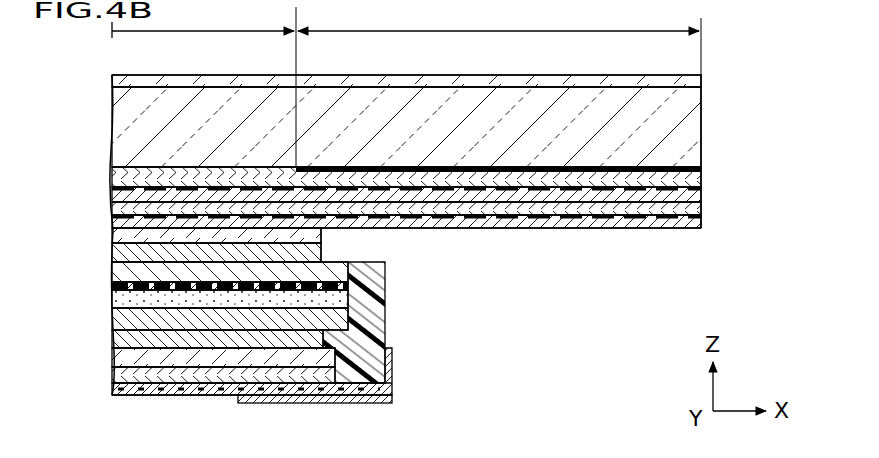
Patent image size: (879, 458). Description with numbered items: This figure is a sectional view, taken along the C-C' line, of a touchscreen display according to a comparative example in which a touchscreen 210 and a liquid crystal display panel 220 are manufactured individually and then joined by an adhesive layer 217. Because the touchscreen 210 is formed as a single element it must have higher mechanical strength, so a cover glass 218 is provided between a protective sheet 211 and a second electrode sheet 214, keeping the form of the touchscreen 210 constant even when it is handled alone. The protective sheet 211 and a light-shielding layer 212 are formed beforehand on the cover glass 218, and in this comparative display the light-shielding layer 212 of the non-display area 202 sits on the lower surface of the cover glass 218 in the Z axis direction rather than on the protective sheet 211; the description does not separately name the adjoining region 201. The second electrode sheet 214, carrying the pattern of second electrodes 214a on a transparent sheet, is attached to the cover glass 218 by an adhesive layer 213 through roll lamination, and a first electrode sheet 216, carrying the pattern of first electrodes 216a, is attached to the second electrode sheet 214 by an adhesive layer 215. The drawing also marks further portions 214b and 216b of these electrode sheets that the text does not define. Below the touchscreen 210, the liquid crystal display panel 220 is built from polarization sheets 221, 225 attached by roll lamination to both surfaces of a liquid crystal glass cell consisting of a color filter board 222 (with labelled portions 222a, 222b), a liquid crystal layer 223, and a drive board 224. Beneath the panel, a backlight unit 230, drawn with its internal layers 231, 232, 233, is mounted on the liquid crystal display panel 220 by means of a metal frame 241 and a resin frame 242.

The first region 201 is at (204, 86).
The non-display area 202 is at (499, 40).
The touchscreen 210 is at (105, 75).
The protective sheet 211 is at (701, 79).
The light-shielding layer 212 is at (701, 169).
The adhesive layer 213 is at (701, 180).
The second electrode sheet 214 is at (701, 195).
The second electrodes 214a is at (165, 195).
The second polarizer portion 214b is at (338, 195).
The adhesive layer 215 is at (701, 209).
The first electrode sheet 216 is at (701, 223).
The first electrodes 216a is at (236, 221).
The second substrate portion 216b is at (421, 221).
The adhesive layer 217 is at (322, 236).
The cover glass 218 is at (701, 120).
The liquid crystal display panel 220 is at (105, 243).
The polarization sheet 221 is at (308, 258).
The color filter board 222 is at (387, 278).
The first support portion 222a is at (126, 290).
The second support portion 222b is at (336, 290).
The liquid crystal layer 223 is at (378, 308).
The drive board 224 is at (387, 326).
The polarization sheet 225 is at (393, 348).
The backlight unit 230 is at (105, 355).
The adhesive layer 231 is at (392, 372).
The metal plate 232 is at (390, 392).
The bottom cover 233 is at (372, 398).
The metal frame 241 is at (240, 398).
The resin frame 242 is at (385, 264).